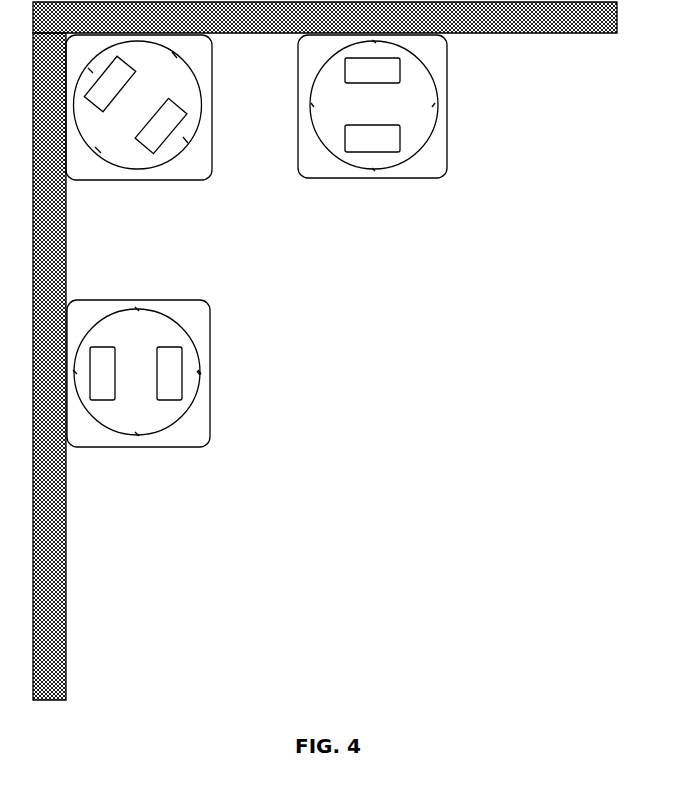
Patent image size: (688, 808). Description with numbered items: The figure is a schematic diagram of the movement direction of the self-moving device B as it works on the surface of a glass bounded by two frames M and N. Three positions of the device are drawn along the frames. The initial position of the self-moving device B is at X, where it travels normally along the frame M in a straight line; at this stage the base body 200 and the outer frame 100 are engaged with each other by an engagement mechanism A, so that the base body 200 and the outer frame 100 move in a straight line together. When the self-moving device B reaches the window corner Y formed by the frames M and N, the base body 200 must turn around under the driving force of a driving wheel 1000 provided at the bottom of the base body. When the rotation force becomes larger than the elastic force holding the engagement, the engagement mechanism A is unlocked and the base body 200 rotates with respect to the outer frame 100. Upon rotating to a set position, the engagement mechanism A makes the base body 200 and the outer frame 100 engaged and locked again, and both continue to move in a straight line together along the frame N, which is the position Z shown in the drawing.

The driving wheel 1000 is at (160, 369).
The base body 200 is at (200, 323).
The outer frame 100 is at (158, 416).
The engagement mechanism A is at (195, 373).
The self-moving device B is at (95, 282).
The initial position X is at (130, 467).
The window corner Y is at (139, 122).
The position after turning Z is at (372, 122).
The frame M is at (67, 366).
The frame N is at (325, 31).